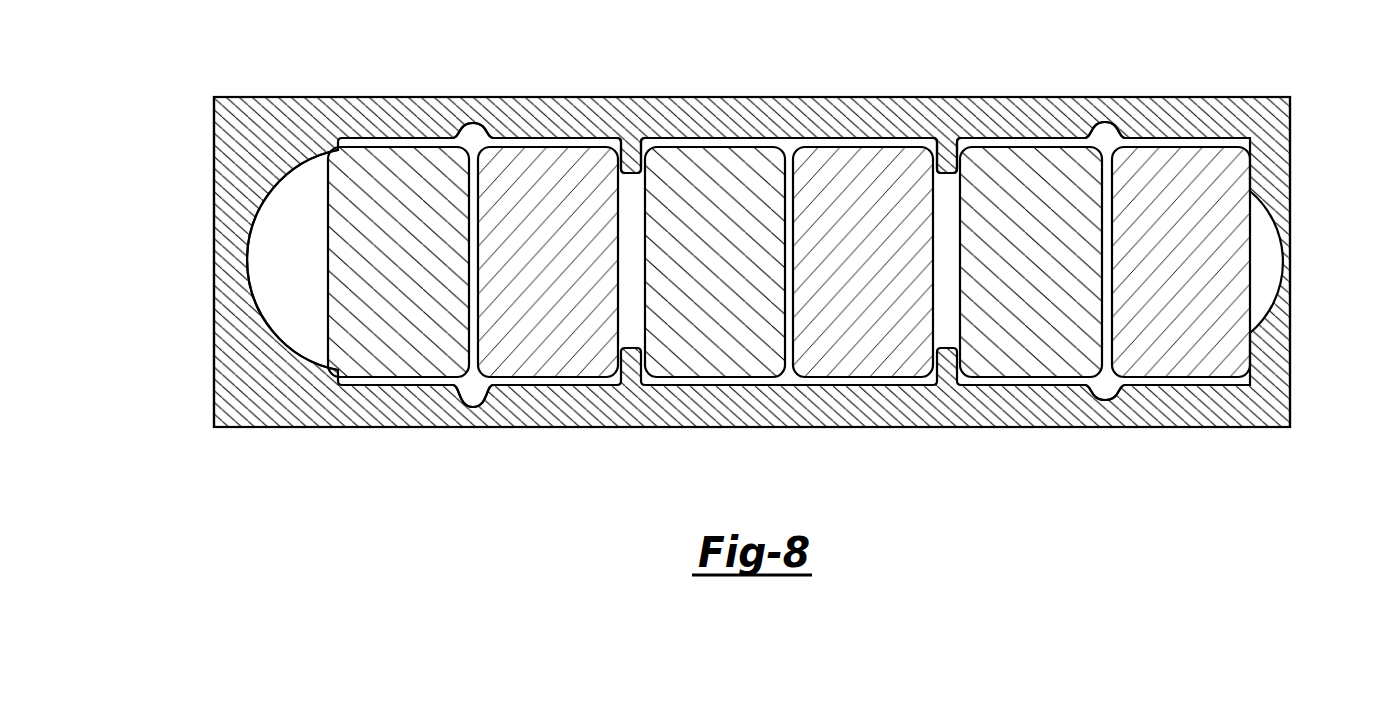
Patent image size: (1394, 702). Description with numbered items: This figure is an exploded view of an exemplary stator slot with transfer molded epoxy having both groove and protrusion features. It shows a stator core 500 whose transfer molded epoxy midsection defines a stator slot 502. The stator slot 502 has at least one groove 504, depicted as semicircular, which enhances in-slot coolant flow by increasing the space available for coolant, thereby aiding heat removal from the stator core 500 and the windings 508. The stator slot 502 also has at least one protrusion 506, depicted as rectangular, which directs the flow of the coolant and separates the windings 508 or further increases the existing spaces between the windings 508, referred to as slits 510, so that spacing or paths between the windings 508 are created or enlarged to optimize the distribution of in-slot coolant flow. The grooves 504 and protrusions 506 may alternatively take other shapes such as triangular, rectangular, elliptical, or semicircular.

The stator core 500 is at (1054, 97).
The stator slot 502 is at (1242, 142).
The groove 504 is at (298, 217).
The protrusion 506 is at (634, 164).
The winding 508 is at (542, 206).
The slit 510 is at (473, 180).